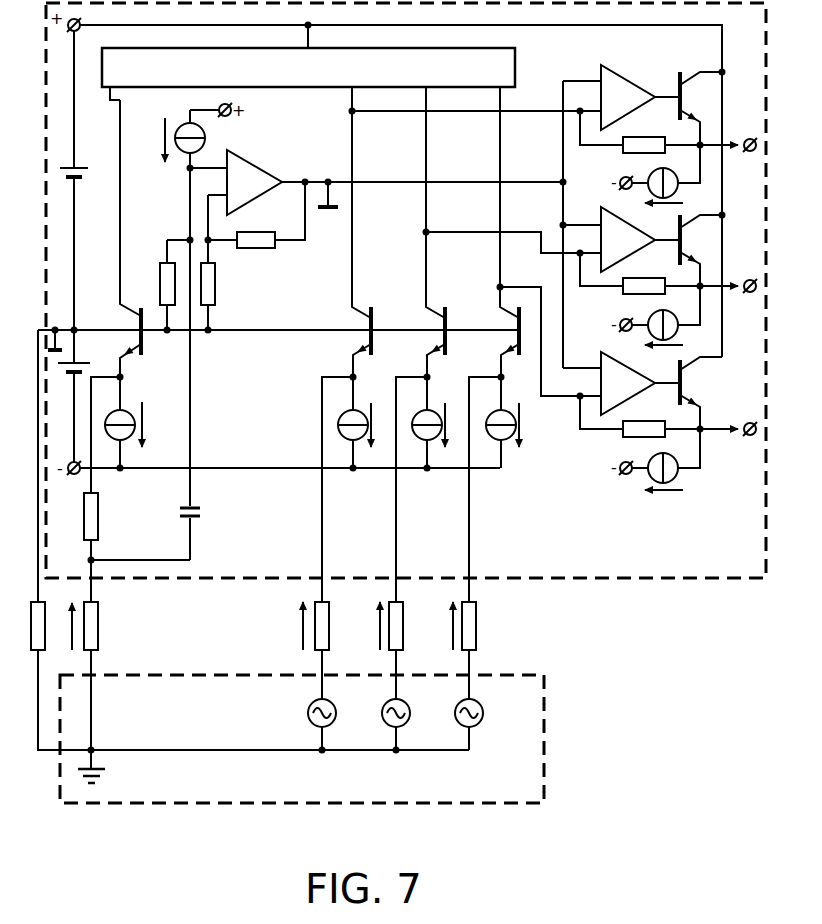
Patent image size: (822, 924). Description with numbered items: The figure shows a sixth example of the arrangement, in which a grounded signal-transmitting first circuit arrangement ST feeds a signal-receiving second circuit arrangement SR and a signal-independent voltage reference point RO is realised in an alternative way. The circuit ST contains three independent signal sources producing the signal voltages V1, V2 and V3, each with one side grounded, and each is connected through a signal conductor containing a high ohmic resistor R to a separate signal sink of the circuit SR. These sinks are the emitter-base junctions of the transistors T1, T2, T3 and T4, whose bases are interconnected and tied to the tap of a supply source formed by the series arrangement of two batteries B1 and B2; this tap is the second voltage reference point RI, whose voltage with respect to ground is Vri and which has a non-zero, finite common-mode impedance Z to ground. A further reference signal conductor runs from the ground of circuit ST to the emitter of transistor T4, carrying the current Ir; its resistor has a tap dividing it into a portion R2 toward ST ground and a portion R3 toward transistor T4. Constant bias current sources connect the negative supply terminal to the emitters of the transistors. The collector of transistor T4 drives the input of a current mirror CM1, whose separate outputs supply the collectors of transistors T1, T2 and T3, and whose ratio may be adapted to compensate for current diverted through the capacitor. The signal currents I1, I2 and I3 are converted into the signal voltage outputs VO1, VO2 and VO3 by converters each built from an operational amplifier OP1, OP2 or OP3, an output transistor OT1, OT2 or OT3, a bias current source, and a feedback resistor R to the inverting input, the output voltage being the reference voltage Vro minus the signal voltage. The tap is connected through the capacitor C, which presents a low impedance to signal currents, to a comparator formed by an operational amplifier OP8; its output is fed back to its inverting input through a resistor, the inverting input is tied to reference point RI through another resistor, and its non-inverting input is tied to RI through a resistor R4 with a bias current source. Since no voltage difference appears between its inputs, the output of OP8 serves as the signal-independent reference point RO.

The signal-receiving second circuit arrangement SR is at (716, 584).
The signal-transmitting first circuit arrangement ST is at (548, 751).
The current mirror CM1 is at (505, 48).
The operational amplifier OP8 is at (236, 157).
The reference voltage Vro is at (304, 178).
The signal-independent voltage reference point RO is at (328, 178).
The battery B1 is at (84, 173).
The battery B2 is at (64, 374).
The second voltage reference point RI is at (55, 327).
The voltage at the second voltage reference point Vri is at (75, 327).
The resistor R4 is at (160, 287).
The transistor T4 is at (143, 336).
The transistor T1 is at (374, 326).
The transistor T2 is at (448, 326).
The transistor T3 is at (516, 336).
The signal current I1 is at (400, 125).
The signal current I2 is at (480, 243).
The signal current I3 is at (543, 280).
The operational amplifier OP1 is at (619, 73).
The operational amplifier OP2 is at (613, 213).
The operational amplifier OP3 is at (614, 356).
The output transistor OT1 is at (678, 80).
The output transistor OT2 is at (685, 249).
The output transistor OT3 is at (678, 392).
The signal voltage output VO1 is at (750, 138).
The signal voltage output VO2 is at (750, 280).
The signal voltage output VO3 is at (750, 423).
The high ohmic resistor R is at (656, 137).
The common-mode impedance Z is at (45, 614).
The resistor portion R3 is at (98, 503).
The resistor portion R2 is at (98, 627).
The capacitor C is at (200, 508).
The reference signal current Ir is at (72, 633).
The signal voltage V1 is at (345, 695).
The signal voltage V2 is at (420, 695).
The signal voltage V3 is at (493, 695).